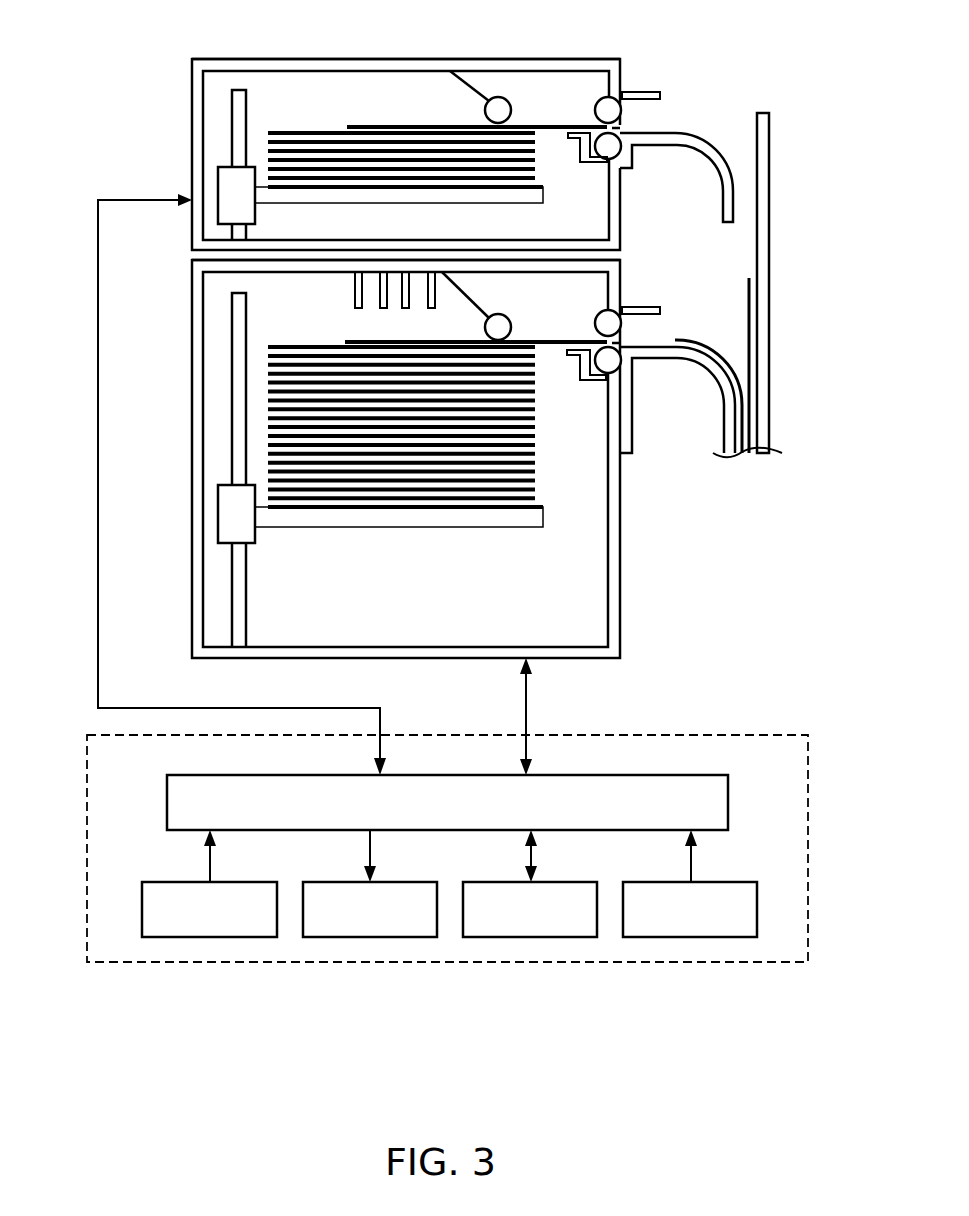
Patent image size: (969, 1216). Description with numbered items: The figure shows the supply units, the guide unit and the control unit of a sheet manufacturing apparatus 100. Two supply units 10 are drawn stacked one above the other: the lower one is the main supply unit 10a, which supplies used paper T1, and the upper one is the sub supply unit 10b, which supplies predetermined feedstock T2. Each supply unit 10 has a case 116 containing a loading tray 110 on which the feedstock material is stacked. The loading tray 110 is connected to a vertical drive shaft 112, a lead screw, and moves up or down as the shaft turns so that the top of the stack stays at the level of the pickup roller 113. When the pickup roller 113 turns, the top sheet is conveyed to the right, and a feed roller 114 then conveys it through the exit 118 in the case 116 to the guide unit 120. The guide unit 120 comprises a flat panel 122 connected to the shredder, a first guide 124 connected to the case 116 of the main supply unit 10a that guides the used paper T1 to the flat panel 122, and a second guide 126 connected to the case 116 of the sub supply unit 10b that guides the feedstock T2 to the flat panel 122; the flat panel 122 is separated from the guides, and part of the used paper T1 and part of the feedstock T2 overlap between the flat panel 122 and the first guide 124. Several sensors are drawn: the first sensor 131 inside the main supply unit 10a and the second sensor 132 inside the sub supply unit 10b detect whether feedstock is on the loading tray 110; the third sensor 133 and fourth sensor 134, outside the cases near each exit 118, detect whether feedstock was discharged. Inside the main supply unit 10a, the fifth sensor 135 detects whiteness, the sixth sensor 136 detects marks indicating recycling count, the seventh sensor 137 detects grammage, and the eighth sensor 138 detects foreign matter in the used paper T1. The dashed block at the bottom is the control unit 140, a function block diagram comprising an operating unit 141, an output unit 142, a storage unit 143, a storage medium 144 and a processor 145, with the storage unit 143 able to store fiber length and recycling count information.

The sheet manufacturing apparatus 100 is at (818, 46).
The supply unit 10 is at (406, 159).
The main supply unit 10a is at (178, 336).
The sub supply unit 10b is at (178, 79).
The loading tray 110 is at (543, 195).
The vertical drive shaft 112 is at (238, 120).
The pickup roller 113 is at (498, 108).
The feed roller 114 is at (607, 108).
The case 116 is at (205, 170).
The exit 118 is at (615, 129).
The guide unit 120 is at (787, 87).
The flat panel 122 is at (763, 245).
The first guide 124 is at (703, 363).
The second guide 126 is at (699, 134).
The first sensor 131 is at (575, 358).
The second sensor 132 is at (575, 141).
The third sensor 133 is at (641, 308).
The fourth sensor 134 is at (641, 95).
The fifth sensor 135 is at (358, 300).
The sixth sensor 136 is at (378, 300).
The seventh sensor 137 is at (412, 303).
The eighth sensor 138 is at (437, 289).
The control unit 140 is at (88, 753).
The operating unit 141 is at (198, 937).
The output unit 142 is at (367, 937).
The storage unit 143 is at (532, 937).
The storage medium 144 is at (692, 937).
The processor 145 is at (167, 807).
The used paper T1 is at (293, 348).
The predetermined feedstock T2 is at (322, 132).